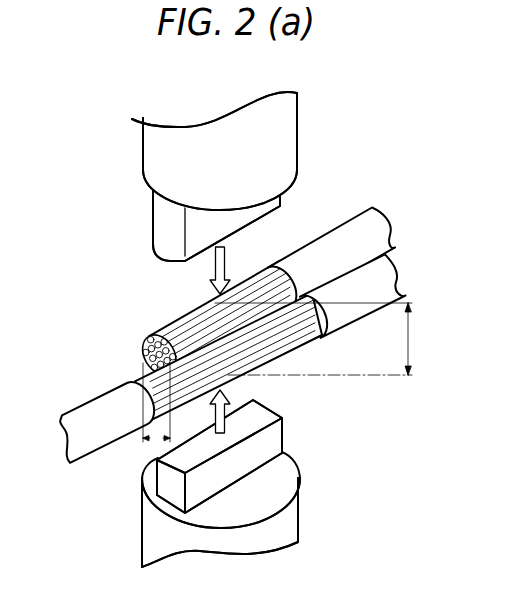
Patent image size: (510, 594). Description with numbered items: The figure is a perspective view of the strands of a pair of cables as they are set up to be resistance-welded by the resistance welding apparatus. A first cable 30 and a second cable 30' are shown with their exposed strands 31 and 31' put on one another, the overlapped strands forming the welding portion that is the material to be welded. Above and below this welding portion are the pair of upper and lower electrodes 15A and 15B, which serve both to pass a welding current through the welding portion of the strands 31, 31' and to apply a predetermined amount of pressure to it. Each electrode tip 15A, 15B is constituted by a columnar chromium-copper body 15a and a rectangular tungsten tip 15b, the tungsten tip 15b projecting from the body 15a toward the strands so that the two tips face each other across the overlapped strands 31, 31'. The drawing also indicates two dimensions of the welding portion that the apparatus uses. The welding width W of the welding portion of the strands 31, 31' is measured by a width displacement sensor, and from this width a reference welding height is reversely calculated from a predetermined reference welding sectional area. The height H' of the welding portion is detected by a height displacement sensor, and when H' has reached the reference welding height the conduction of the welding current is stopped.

The upper electrode 15A is at (306, 118).
The lower electrode 15B is at (132, 548).
The columnar chromium-copper body 15a is at (143, 160).
The rectangular tungsten tip 15b is at (153, 230).
The cable 30 is at (217, 390).
The cable 30' is at (265, 269).
The strands 31 is at (242, 358).
The strands 31' is at (213, 321).
The welding width W is at (146, 443).
The height of the welding portion H' is at (327, 339).